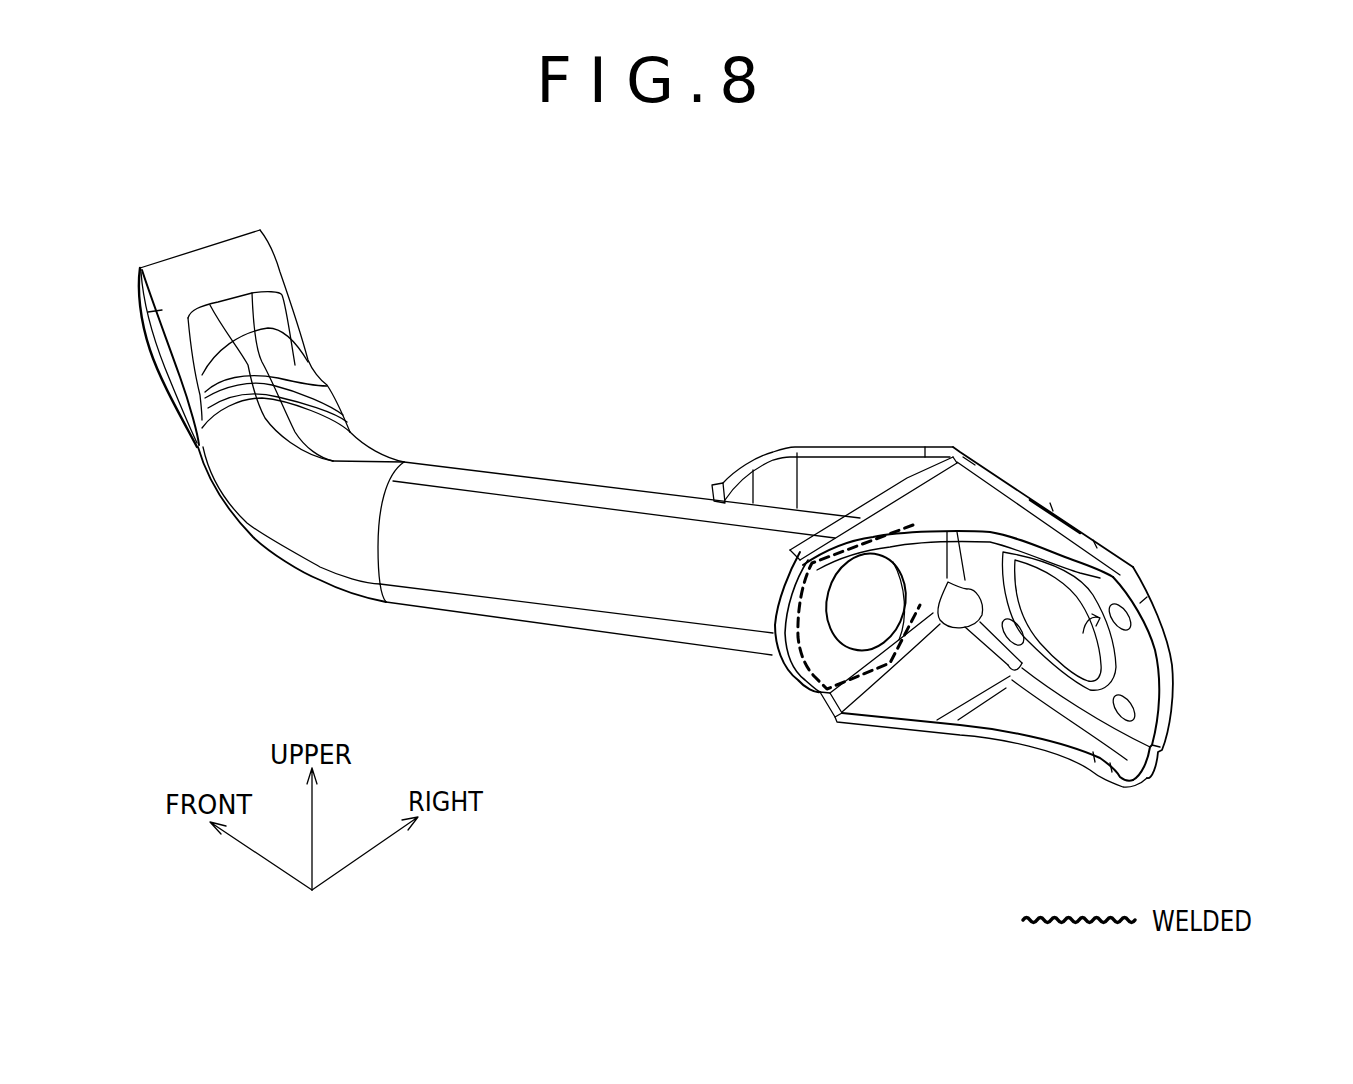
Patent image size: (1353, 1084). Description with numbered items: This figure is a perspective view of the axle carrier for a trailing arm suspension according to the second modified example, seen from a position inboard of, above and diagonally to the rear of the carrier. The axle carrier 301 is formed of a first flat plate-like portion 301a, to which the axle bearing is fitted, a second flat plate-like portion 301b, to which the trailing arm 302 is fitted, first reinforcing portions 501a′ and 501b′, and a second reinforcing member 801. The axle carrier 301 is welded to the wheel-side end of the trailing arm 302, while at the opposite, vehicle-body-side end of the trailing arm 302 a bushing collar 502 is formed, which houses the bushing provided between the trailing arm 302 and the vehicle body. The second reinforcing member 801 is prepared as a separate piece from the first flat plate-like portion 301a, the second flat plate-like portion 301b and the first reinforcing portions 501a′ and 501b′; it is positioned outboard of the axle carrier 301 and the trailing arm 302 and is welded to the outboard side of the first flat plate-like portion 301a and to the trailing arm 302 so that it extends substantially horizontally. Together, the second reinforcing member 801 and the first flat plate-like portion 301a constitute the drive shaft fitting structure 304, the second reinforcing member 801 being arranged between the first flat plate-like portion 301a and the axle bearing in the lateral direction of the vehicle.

The bushing collar 502 is at (200, 258).
The trailing arm 302 is at (240, 497).
The second reinforcing member 801 is at (853, 484).
The first reinforcing portion 501a′ is at (988, 510).
The axle carrier 301 is at (980, 603).
The drive shaft fitting structure 304 is at (1113, 645).
The first flat plate-like portion 301a is at (1147, 665).
The second flat plate-like portion 301b is at (818, 650).
The first reinforcing portion 501b′ is at (1008, 707).